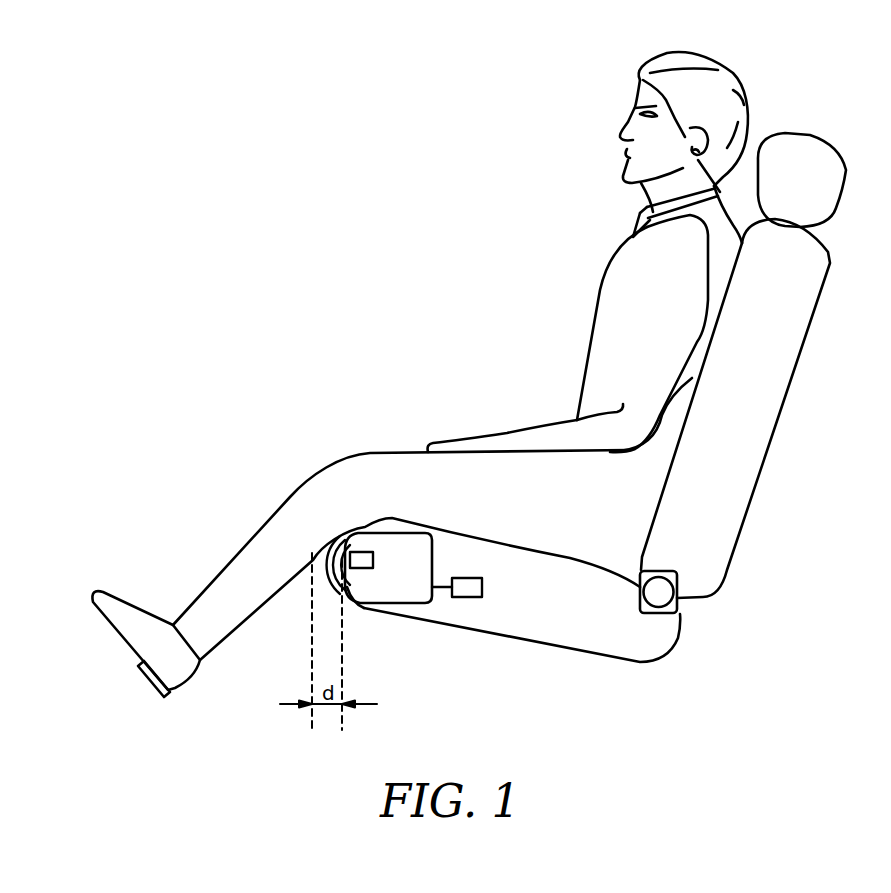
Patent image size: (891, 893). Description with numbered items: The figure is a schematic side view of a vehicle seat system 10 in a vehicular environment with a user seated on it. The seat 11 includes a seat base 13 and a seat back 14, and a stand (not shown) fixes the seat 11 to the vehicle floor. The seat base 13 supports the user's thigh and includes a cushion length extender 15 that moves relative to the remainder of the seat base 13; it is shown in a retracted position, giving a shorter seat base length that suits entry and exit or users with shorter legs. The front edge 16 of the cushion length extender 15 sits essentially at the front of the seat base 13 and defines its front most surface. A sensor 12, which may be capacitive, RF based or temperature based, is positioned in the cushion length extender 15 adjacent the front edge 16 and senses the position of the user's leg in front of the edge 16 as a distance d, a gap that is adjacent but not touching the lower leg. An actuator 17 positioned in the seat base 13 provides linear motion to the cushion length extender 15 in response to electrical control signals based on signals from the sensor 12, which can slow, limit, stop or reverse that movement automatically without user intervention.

The vehicle seat system 10 is at (813, 72).
The seat 11 is at (817, 287).
The sensor 12 is at (373, 560).
The seat base 13 is at (613, 662).
The seat back 14 is at (807, 434).
The cushion length extender 15 is at (408, 605).
The front edge 16 is at (350, 598).
The actuator 17 is at (482, 587).